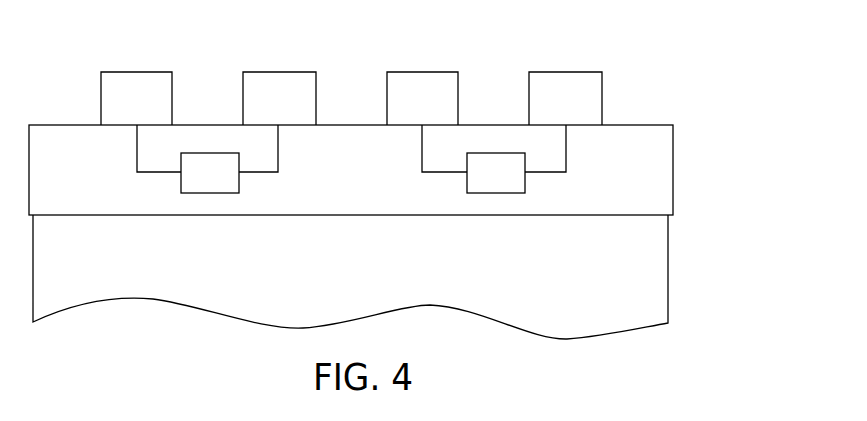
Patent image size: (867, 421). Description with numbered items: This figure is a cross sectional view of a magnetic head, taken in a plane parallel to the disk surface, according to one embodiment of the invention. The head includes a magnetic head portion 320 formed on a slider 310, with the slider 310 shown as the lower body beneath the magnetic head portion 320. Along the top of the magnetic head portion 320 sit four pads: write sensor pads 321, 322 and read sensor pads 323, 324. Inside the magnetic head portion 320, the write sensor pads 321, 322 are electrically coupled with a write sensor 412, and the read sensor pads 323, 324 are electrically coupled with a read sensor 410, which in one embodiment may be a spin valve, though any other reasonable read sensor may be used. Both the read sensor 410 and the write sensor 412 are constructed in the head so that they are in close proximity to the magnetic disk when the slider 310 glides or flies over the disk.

The slider 310 is at (657, 278).
The magnetic head portion 320 is at (657, 193).
The write sensor pad 321 is at (139, 72).
The write sensor pad 322 is at (282, 72).
The read sensor pad 323 is at (426, 72).
The read sensor pad 324 is at (569, 72).
The read sensor 410 is at (514, 186).
The write sensor 412 is at (228, 186).